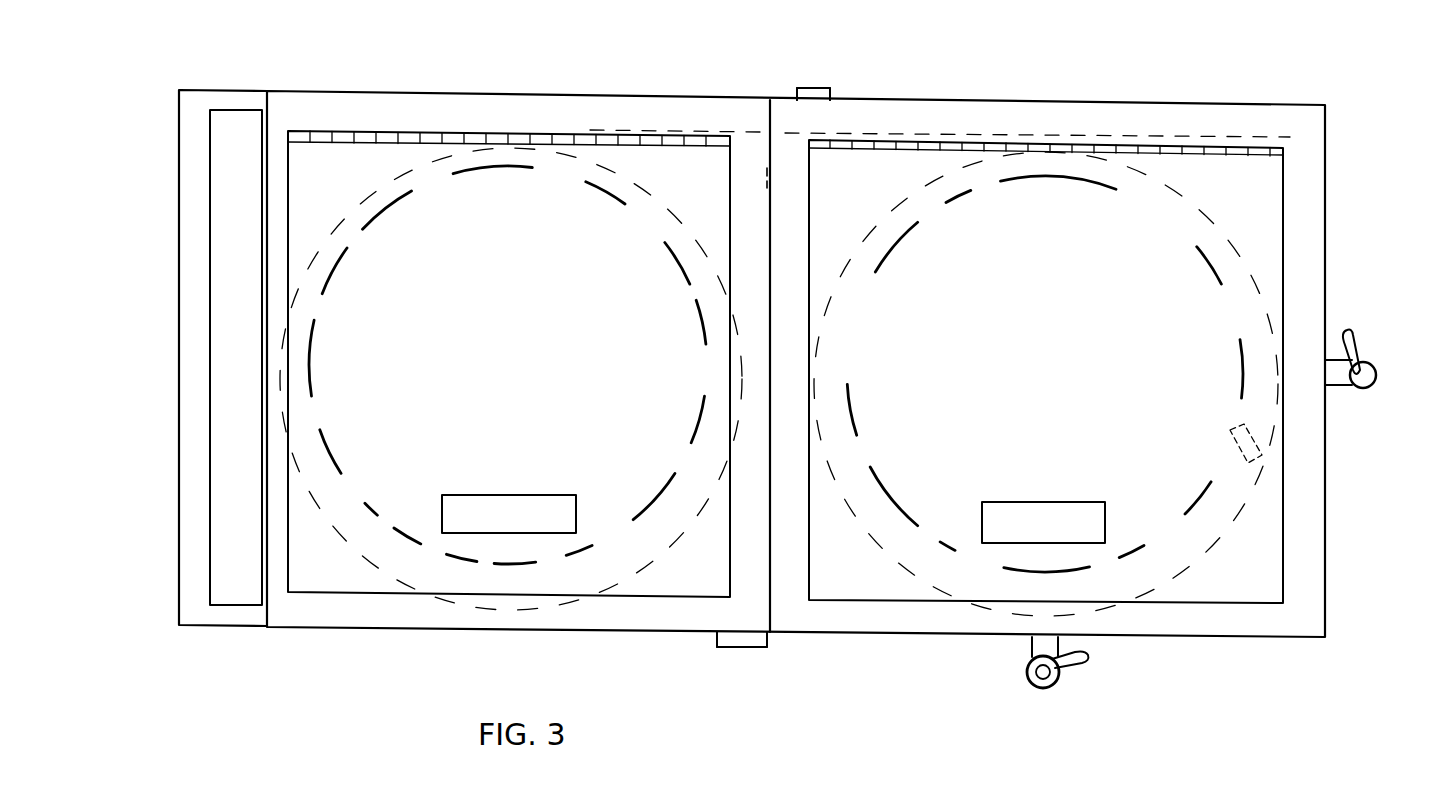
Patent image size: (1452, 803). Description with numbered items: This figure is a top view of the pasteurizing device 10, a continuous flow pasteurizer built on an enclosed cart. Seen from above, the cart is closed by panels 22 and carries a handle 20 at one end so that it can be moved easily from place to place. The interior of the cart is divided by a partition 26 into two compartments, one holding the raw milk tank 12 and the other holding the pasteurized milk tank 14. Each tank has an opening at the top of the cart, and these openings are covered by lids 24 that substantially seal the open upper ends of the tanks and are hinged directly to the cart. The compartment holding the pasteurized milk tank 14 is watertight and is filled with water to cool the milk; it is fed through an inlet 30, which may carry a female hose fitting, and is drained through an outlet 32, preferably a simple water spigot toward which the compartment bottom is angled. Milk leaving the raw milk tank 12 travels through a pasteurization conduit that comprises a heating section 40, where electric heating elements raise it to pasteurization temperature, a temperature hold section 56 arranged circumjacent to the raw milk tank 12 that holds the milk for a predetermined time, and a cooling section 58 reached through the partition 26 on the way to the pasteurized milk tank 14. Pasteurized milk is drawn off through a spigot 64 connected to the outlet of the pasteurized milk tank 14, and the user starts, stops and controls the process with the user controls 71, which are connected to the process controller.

The pasteurizing device 10 is at (1240, 77).
The raw milk tank 12 is at (420, 540).
The pasteurized milk tank 14 is at (1185, 513).
The handle 20 is at (180, 446).
The panels 22 is at (975, 100).
The lids 24 is at (737, 160).
The partition 26 is at (755, 100).
The inlet 30 is at (805, 88).
The outlet 32 is at (1375, 355).
The heating section 40 is at (507, 301).
The temperature hold section 56 is at (362, 185).
The cooling section 58 is at (1246, 250).
The spigot 64 is at (1062, 675).
The user controls 71 is at (742, 642).